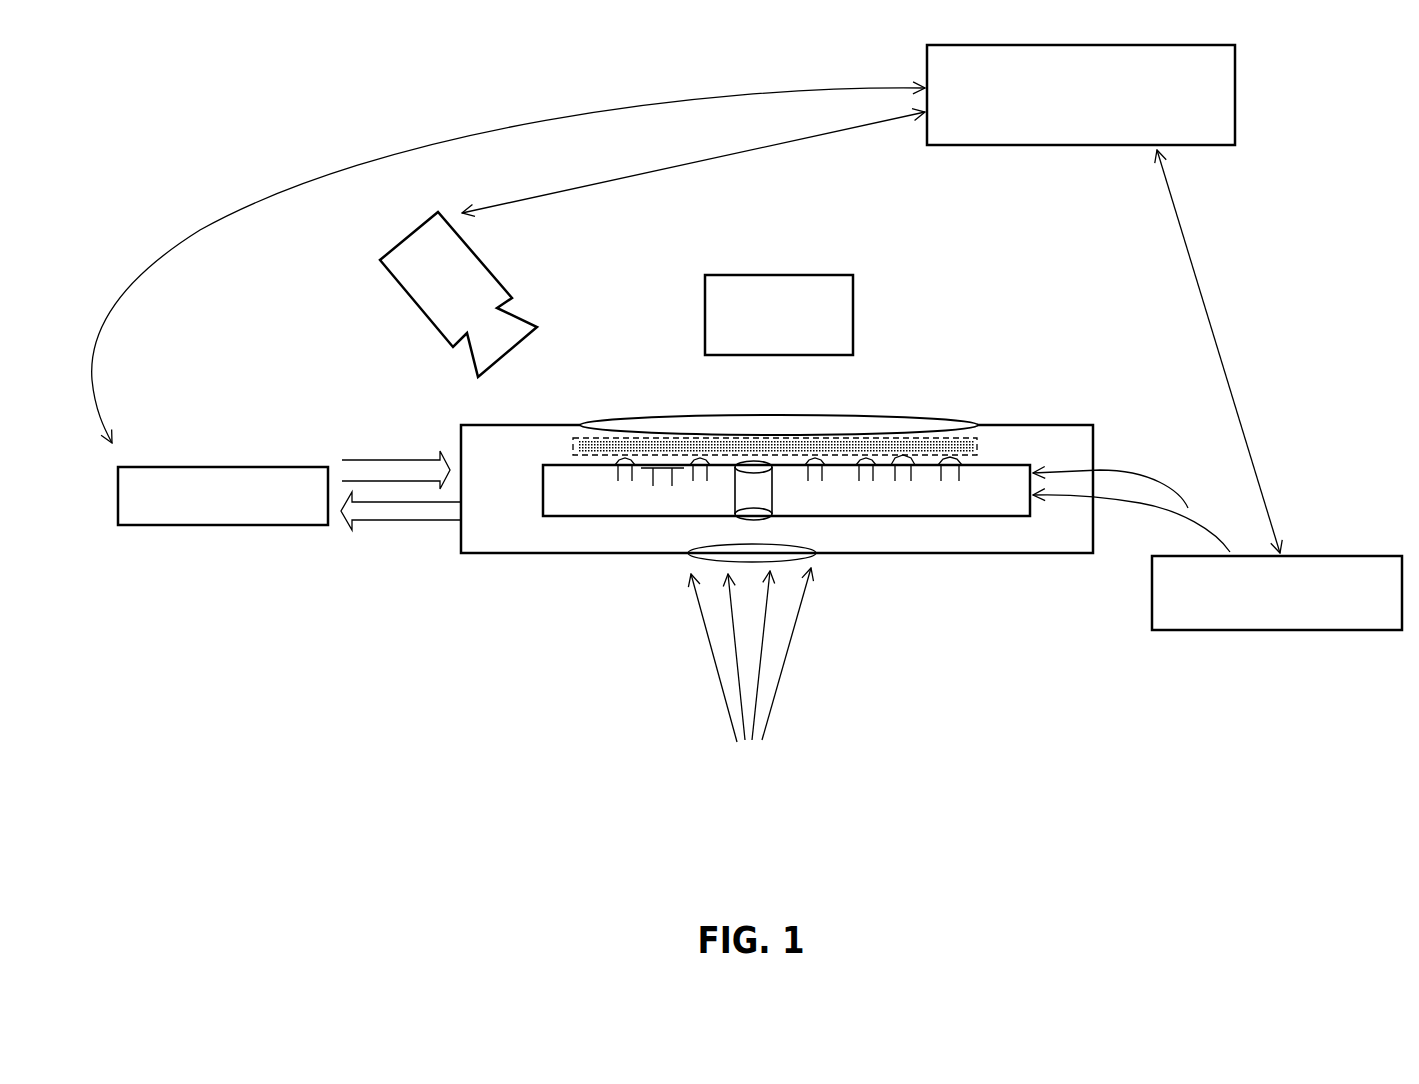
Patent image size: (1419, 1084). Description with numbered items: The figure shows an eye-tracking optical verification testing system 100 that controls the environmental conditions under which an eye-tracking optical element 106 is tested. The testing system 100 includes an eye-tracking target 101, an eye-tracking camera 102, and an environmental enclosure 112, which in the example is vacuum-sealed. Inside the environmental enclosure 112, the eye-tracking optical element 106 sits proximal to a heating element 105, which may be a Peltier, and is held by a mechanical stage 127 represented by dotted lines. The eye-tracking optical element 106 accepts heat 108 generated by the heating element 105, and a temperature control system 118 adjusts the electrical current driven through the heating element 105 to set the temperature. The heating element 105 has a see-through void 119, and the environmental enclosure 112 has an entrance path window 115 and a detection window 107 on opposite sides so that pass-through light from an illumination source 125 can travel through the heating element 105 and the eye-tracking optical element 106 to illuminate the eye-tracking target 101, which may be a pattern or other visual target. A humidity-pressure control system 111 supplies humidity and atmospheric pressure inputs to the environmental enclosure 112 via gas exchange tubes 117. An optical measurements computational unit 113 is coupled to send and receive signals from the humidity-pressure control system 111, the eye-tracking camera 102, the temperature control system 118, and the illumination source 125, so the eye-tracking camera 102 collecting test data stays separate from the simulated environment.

The eye-tracking optical verification testing system 100 is at (1335, 130).
The eye-tracking target 101 is at (705, 316).
The eye-tracking camera 102 is at (427, 323).
The heating element 105 is at (543, 518).
The eye-tracking optical element 106 is at (603, 447).
The detection window 107 is at (963, 418).
The heat 108 is at (953, 478).
The humidity-pressure control system 111 is at (200, 527).
The environmental enclosure 112 is at (461, 426).
The optical measurements computational unit 113 is at (990, 145).
The entrance path window 115 is at (688, 558).
The gas exchange tubes 117 is at (387, 520).
The temperature control system 118 is at (1152, 610).
The see-through void 119 is at (773, 497).
The illumination source 125 is at (751, 671).
The mechanical stage 127 is at (573, 438).